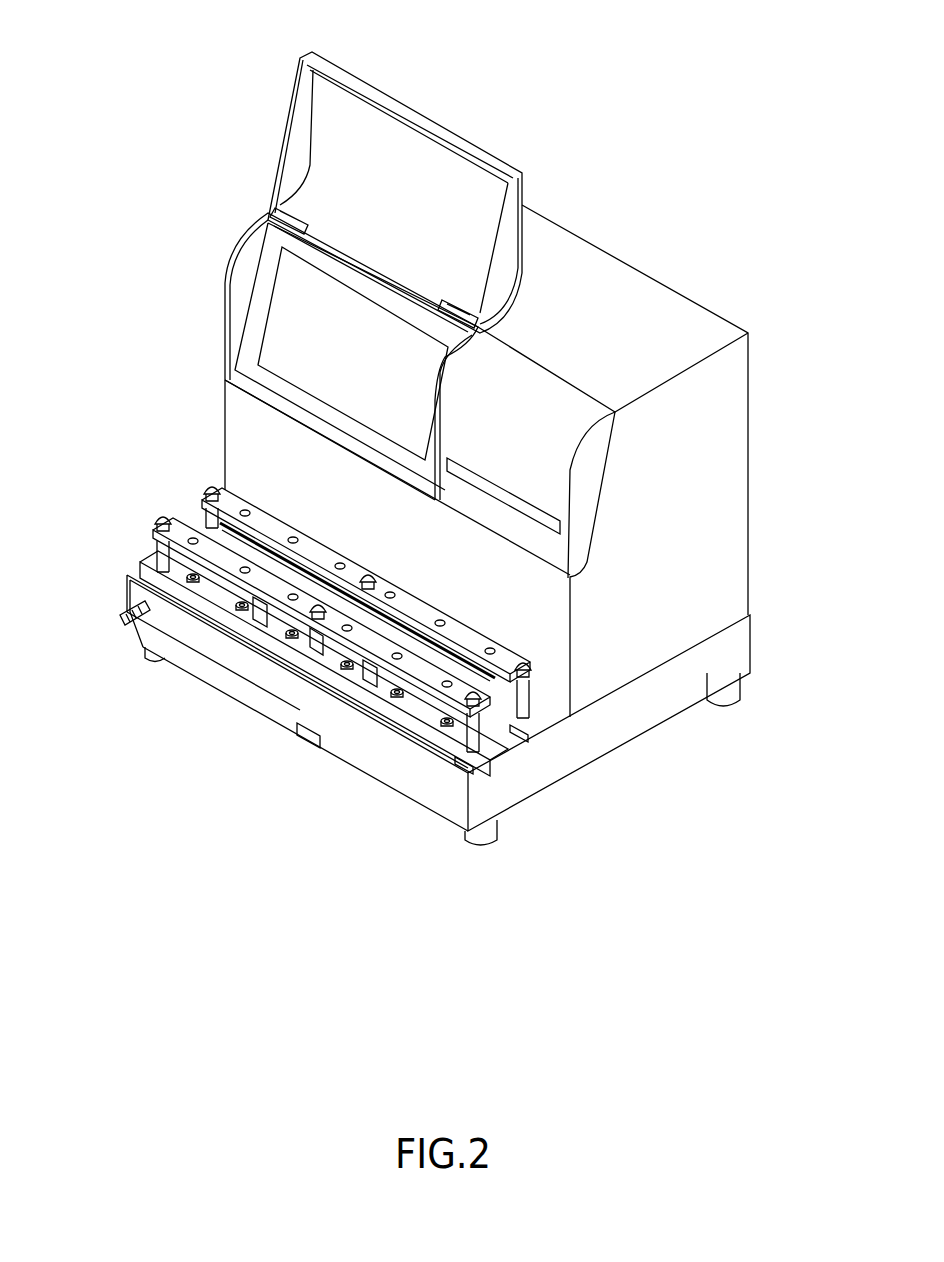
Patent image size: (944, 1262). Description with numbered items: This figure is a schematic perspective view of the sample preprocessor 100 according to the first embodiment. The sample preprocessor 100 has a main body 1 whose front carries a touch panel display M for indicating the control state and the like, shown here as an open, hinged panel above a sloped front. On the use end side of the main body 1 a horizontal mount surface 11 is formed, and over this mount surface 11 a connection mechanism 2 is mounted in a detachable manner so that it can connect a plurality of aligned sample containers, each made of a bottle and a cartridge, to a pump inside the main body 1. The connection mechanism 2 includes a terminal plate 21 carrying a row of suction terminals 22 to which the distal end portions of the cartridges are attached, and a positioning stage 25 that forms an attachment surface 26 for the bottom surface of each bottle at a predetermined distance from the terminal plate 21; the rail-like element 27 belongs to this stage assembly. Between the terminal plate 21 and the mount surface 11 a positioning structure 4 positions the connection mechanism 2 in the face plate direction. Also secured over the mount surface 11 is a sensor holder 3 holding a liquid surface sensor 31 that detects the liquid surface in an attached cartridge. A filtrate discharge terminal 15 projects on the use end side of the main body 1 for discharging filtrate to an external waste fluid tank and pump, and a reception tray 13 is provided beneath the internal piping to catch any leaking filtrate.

The sample preprocessor 100 is at (695, 72).
The main body 1 is at (600, 248).
The touch panel display M is at (275, 285).
The connection mechanism 2 is at (197, 480).
The sensor holder 3 is at (193, 518).
The positioning structure 4 is at (515, 713).
The mount surface 11 is at (497, 733).
The reception tray 13 is at (297, 747).
The filtrate discharge terminal 15 is at (127, 622).
The terminal plate 21 is at (150, 567).
The suction terminal 22 is at (242, 608).
The positioning stage 25 is at (155, 532).
The attachment surface 26 is at (216, 563).
The rail plate 27 is at (203, 540).
The liquid surface sensor 31 is at (485, 675).